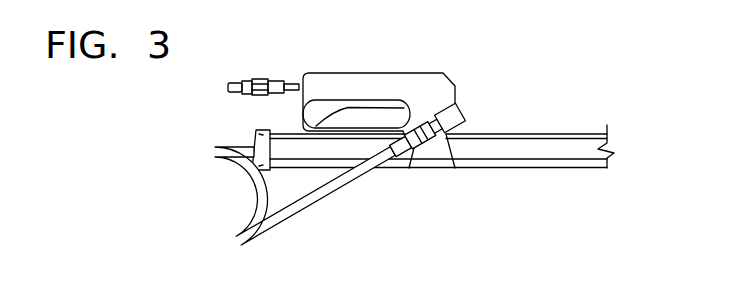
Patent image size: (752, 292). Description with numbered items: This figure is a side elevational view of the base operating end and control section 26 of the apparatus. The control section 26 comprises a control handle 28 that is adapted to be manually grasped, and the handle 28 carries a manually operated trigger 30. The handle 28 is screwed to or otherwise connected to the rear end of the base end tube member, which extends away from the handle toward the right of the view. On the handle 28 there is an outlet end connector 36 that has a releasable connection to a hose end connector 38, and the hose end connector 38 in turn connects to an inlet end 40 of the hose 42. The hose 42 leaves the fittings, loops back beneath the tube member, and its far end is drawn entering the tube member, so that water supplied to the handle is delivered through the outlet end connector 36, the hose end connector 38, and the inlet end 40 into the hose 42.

The control section 26 is at (324, 74).
The control handle 28 is at (358, 85).
The trigger 30 is at (268, 82).
The outlet end connector 36 is at (443, 133).
The hose end connector 38 is at (412, 143).
The inlet end 40 is at (388, 162).
The hose 42 is at (328, 187).